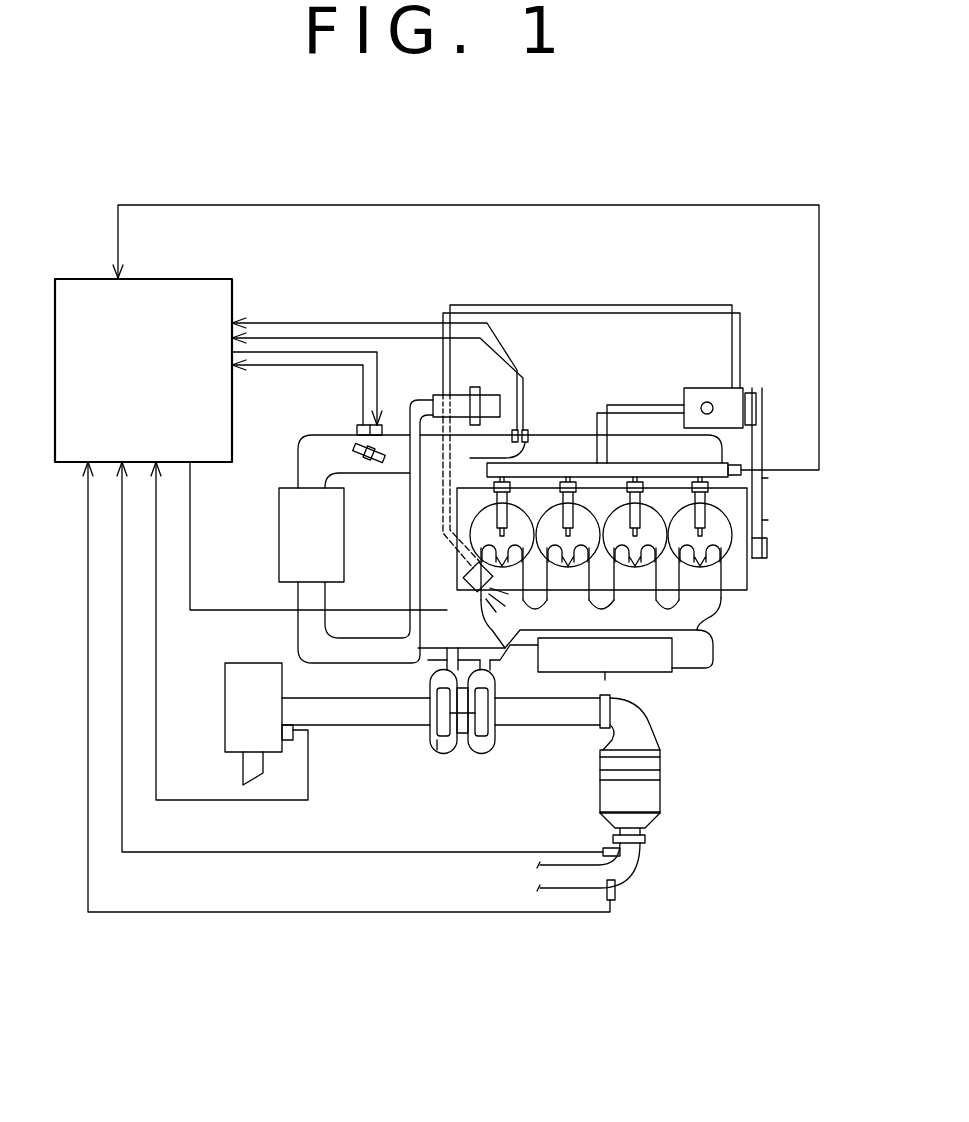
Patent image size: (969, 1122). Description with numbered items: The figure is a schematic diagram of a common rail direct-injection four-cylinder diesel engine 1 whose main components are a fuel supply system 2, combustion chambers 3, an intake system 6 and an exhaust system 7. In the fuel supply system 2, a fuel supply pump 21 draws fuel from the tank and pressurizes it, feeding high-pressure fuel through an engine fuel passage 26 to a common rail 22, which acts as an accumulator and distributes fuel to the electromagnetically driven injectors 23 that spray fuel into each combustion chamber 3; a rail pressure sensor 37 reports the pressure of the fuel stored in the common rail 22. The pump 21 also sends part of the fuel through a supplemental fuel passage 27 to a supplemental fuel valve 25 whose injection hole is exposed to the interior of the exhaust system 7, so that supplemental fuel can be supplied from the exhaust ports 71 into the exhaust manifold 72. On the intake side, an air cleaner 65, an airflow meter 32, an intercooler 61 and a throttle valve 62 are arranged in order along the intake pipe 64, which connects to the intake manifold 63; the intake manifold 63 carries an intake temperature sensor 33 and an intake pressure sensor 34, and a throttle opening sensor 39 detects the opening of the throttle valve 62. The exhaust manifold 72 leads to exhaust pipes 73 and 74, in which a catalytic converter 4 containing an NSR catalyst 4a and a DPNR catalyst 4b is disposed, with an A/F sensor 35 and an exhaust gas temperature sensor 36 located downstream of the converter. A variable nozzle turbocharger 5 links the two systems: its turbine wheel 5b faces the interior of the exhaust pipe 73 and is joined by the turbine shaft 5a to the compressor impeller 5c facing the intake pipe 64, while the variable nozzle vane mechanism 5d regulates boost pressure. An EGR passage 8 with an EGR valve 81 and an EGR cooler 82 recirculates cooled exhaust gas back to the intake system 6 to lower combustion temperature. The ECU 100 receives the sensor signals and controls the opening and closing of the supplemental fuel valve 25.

The electronic control unit 100 is at (92, 279).
The diesel engine 1 is at (750, 586).
The fuel supply system 2 is at (753, 390).
The combustion chamber 3 is at (766, 572).
The catalytic converter 4 is at (665, 745).
The NOx storage reduction catalyst 4a is at (656, 762).
The DPNR catalyst 4b is at (656, 805).
The turbocharger 5 is at (450, 772).
The turbine shaft 5a is at (440, 705).
The turbine wheel 5b is at (485, 745).
The compressor impeller 5c is at (437, 745).
The variable nozzle vane mechanism 5d is at (462, 750).
The intake system 6 is at (562, 430).
The exhaust system 7 is at (720, 610).
The EGR passage 8 is at (700, 645).
The fuel supply pump 21 is at (706, 388).
The common rail 22 is at (741, 468).
The injector 23 is at (766, 520).
The supplemental fuel valve 25 is at (460, 578).
The engine fuel passage 26 is at (645, 405).
The supplemental fuel passage 27 is at (530, 305).
The airflow meter 32 is at (290, 742).
The intake temperature sensor 33 is at (470, 458).
The intake pressure sensor 34 is at (526, 430).
The A/F sensor 35 is at (616, 898).
The exhaust gas temperature sensor 36 is at (603, 842).
The rail pressure sensor 37 is at (766, 483).
The throttle opening sensor 39 is at (357, 428).
The intercooler 61 is at (279, 522).
The throttle valve 62 is at (383, 447).
The intake manifold 63 is at (757, 420).
The intake pipe 64 is at (298, 455).
The air cleaner 65 is at (225, 690).
The exhaust port 71 is at (620, 600).
The exhaust manifold 72 is at (490, 637).
The exhaust pipe 73 is at (560, 698).
The exhaust pipe 74 is at (640, 868).
The EGR valve 81 is at (468, 395).
The EGR cooler 82 is at (640, 680).